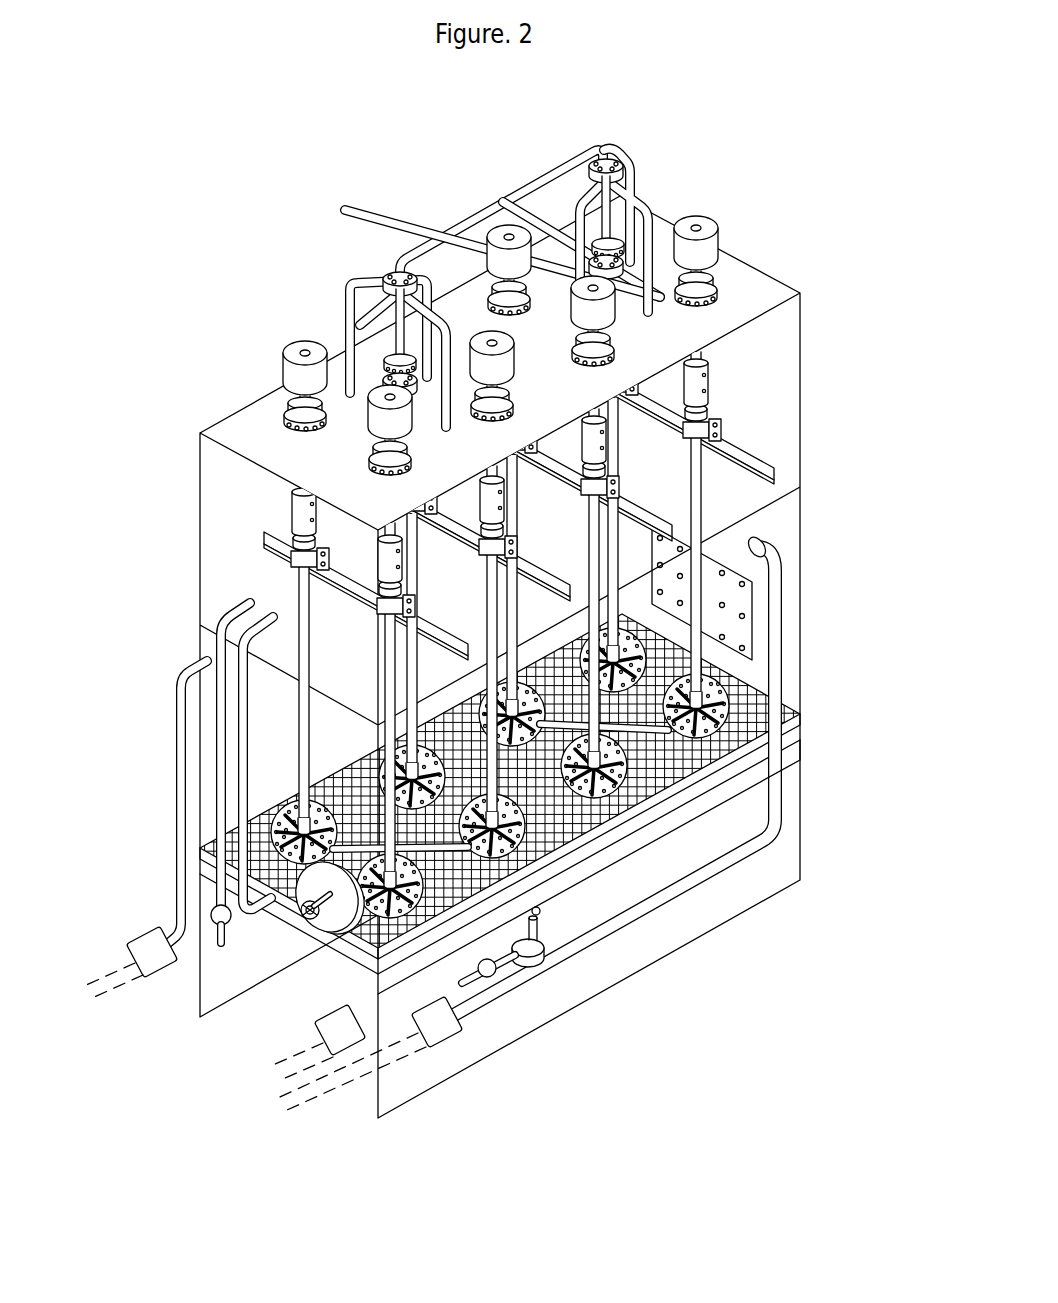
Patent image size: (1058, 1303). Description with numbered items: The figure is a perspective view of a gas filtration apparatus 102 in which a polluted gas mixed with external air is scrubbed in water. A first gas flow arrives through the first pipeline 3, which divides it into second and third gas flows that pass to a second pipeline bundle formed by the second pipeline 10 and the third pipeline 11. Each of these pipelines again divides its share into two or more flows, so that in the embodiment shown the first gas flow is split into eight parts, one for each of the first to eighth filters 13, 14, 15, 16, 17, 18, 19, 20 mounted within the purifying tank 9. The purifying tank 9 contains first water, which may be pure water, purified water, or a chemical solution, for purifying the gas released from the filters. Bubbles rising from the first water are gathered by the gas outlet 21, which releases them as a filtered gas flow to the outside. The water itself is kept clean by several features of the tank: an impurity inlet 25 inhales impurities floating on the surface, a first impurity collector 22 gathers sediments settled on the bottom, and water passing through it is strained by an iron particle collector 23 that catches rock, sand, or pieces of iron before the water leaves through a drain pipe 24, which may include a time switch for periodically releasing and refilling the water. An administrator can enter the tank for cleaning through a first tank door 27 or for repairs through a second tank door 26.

The culture apparatus 102 is at (470, 162).
The first pipeline 3 is at (358, 207).
The purifying tank 9 is at (200, 527).
The second pipeline 10 is at (387, 368).
The third pipeline 11 is at (623, 240).
The first filter 13 is at (265, 850).
The second filter 14 is at (404, 905).
The third filter 15 is at (423, 729).
The fourth filter 16 is at (550, 852).
The fifth filter 17 is at (517, 682).
The sixth filter 18 is at (665, 804).
The seventh filter 19 is at (636, 622).
The eighth filter 20 is at (750, 713).
The gas outlet 21 is at (650, 274).
The first impurity collector 22 is at (553, 887).
The iron particle collector 23 is at (530, 948).
The drain pipe 24 is at (400, 920).
The impurity inlet 25 is at (773, 593).
The second tank door 26 is at (752, 613).
The first tank door 27 is at (330, 922).